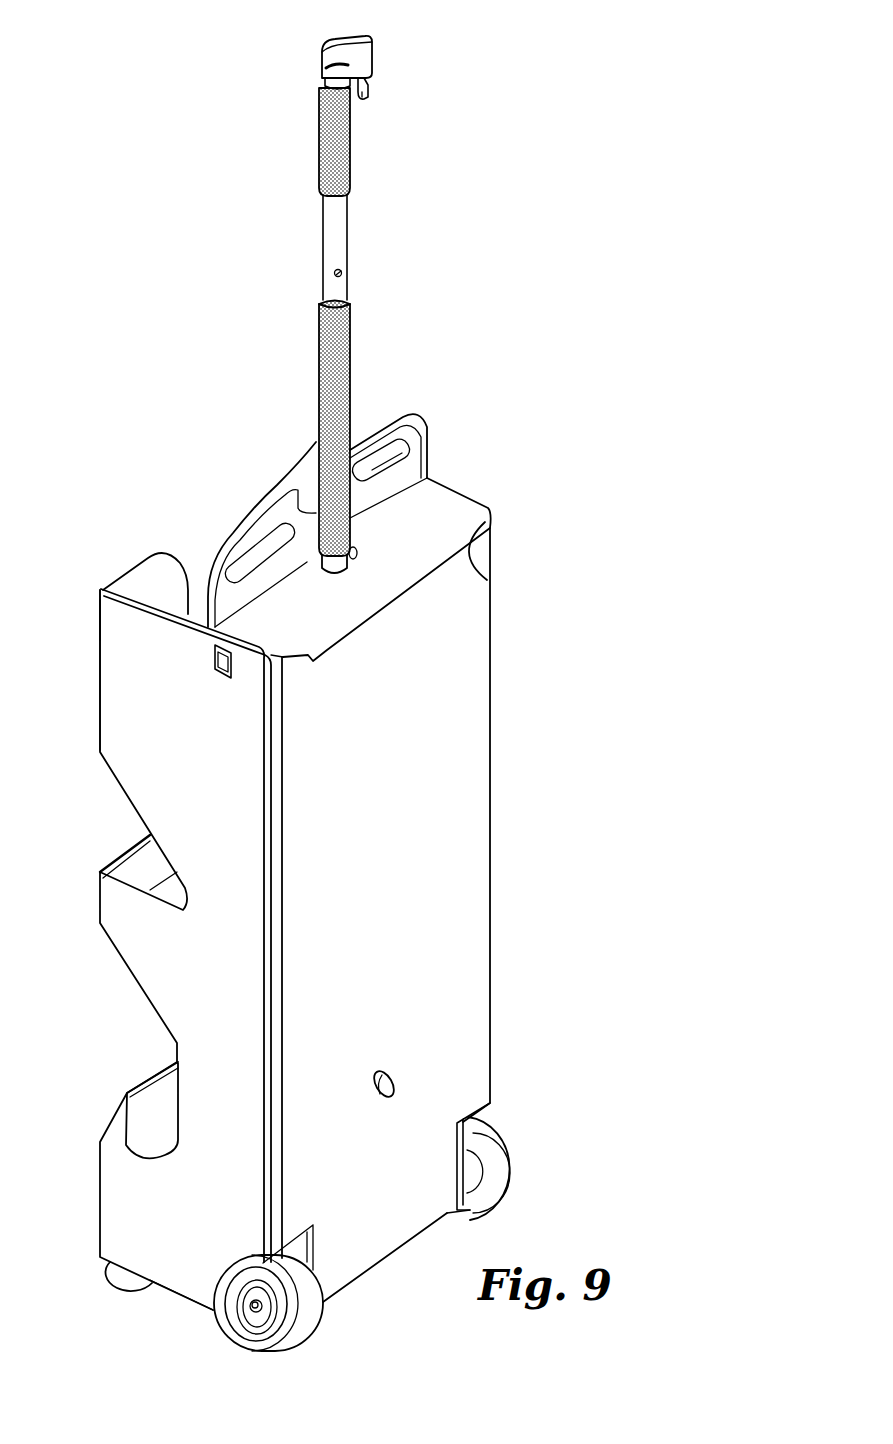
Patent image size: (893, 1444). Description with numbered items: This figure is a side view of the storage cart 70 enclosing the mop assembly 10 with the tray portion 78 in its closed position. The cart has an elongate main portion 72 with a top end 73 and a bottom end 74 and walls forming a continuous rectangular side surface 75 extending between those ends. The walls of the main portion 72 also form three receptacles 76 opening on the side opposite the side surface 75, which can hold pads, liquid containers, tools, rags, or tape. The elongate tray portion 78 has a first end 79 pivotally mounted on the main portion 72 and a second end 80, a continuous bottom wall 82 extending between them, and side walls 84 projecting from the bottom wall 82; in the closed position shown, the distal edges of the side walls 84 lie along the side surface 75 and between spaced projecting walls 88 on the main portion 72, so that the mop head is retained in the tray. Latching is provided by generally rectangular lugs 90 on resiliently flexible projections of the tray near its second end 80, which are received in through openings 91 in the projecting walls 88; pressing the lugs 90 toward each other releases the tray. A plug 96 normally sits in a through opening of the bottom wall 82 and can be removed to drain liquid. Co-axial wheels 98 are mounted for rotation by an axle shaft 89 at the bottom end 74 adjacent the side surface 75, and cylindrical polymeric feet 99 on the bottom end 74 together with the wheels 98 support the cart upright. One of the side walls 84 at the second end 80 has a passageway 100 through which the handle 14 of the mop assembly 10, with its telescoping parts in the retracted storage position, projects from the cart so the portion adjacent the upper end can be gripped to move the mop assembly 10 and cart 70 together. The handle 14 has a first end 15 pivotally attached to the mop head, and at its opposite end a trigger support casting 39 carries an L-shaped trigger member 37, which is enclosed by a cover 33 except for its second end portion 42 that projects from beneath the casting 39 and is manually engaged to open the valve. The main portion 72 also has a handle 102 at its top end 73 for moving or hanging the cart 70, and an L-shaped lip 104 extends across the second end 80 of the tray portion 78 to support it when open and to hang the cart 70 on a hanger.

The mop assembly 10 is at (352, 334).
The handle 14 is at (350, 173).
The first end 15 is at (320, 119).
The cover 33 is at (346, 38).
The trigger member 37 is at (370, 79).
The trigger support casting 39 is at (320, 66).
The second end portion 42 is at (366, 98).
The storage cart 70 is at (482, 493).
The main portion 72 is at (105, 718).
The top end 73 is at (98, 598).
The bottom end 74 is at (168, 1278).
The side surface 75 is at (413, 472).
The receptacles 76 is at (148, 570).
The tray portion 78 is at (480, 660).
The first end 79 is at (366, 1240).
The second end 80 is at (484, 522).
The bottom wall 82 is at (364, 979).
The side walls 84 is at (278, 766).
The projecting walls 88 is at (164, 950).
The axle shaft 89 is at (253, 1313).
The lugs 90 is at (222, 670).
The through openings 91 is at (213, 657).
The plug 96 is at (378, 1080).
The wheels 98 is at (322, 1317).
The feet 99 is at (117, 1274).
The passageway 100 is at (345, 557).
The handle 102 is at (413, 428).
The L-shaped lip 104 is at (470, 577).